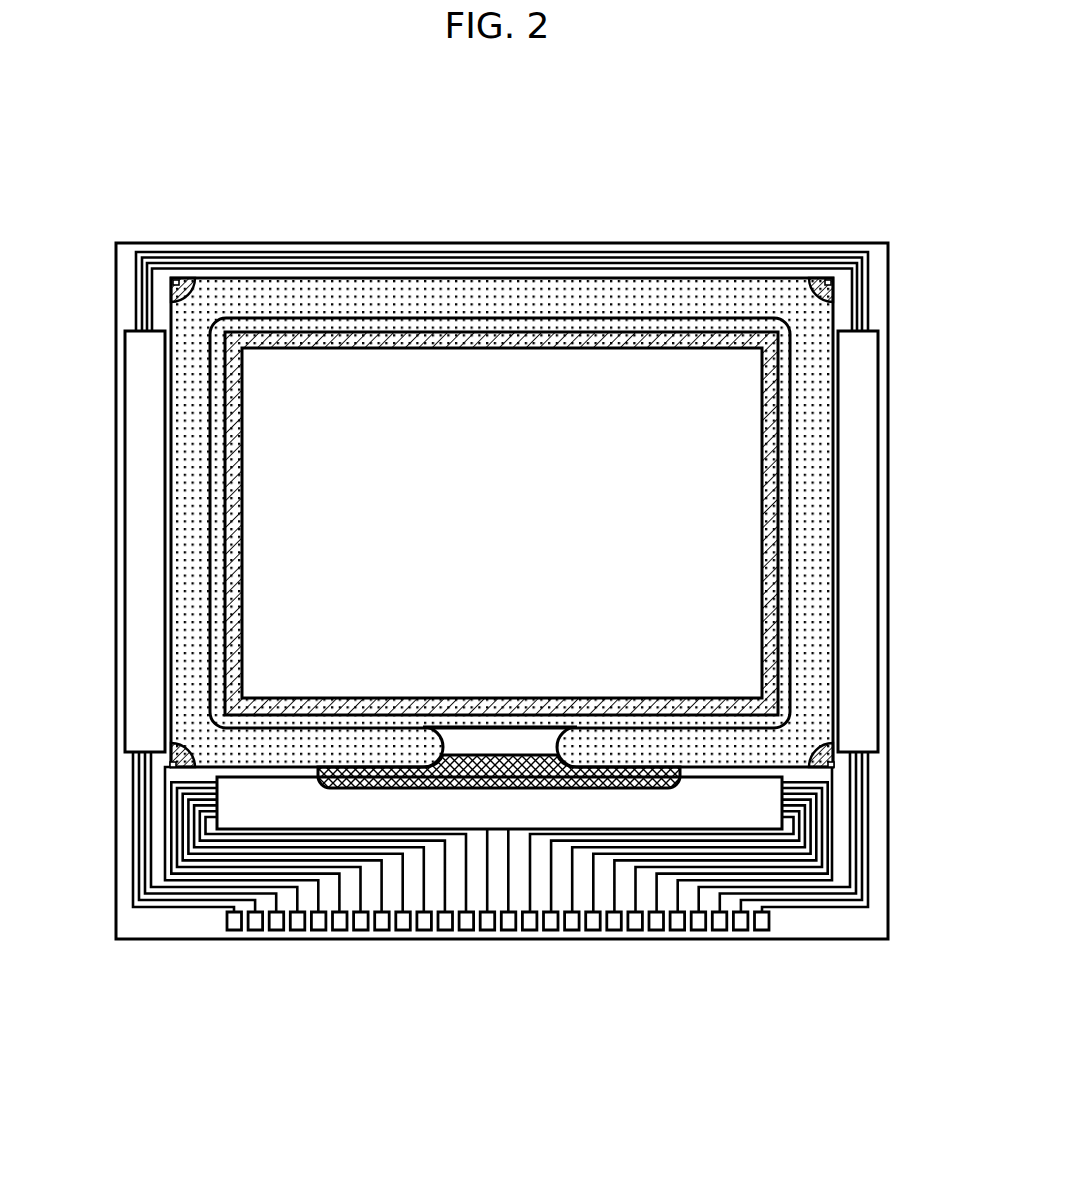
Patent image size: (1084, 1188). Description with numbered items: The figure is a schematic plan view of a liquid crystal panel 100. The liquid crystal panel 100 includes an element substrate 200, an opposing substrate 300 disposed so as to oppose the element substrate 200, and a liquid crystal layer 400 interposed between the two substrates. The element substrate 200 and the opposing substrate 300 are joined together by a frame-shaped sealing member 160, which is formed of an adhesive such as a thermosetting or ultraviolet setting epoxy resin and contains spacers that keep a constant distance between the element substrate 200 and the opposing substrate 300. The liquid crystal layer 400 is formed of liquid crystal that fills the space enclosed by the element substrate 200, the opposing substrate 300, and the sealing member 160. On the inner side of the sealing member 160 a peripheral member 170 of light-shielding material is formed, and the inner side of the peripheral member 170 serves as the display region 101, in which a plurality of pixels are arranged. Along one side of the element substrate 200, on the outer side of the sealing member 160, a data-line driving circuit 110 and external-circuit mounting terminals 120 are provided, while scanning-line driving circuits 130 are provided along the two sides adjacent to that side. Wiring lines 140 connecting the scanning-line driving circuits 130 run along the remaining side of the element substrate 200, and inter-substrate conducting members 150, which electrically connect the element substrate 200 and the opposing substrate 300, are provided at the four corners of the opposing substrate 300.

The liquid crystal panel 100 is at (610, 176).
The display region 101 is at (657, 546).
The data-line driving circuit 110 is at (498, 802).
The external-circuit mounting terminals 120 is at (402, 921).
The scanning-line driving circuits 130 is at (131, 606).
The wiring lines 140 is at (303, 252).
The inter-substrate conducting members 150 is at (177, 282).
The sealing member 160 is at (820, 455).
The peripheral member 170 is at (768, 470).
The element substrate 200 is at (433, 243).
The opposing substrate 300 is at (546, 284).
The liquid crystal layer 400 is at (617, 392).